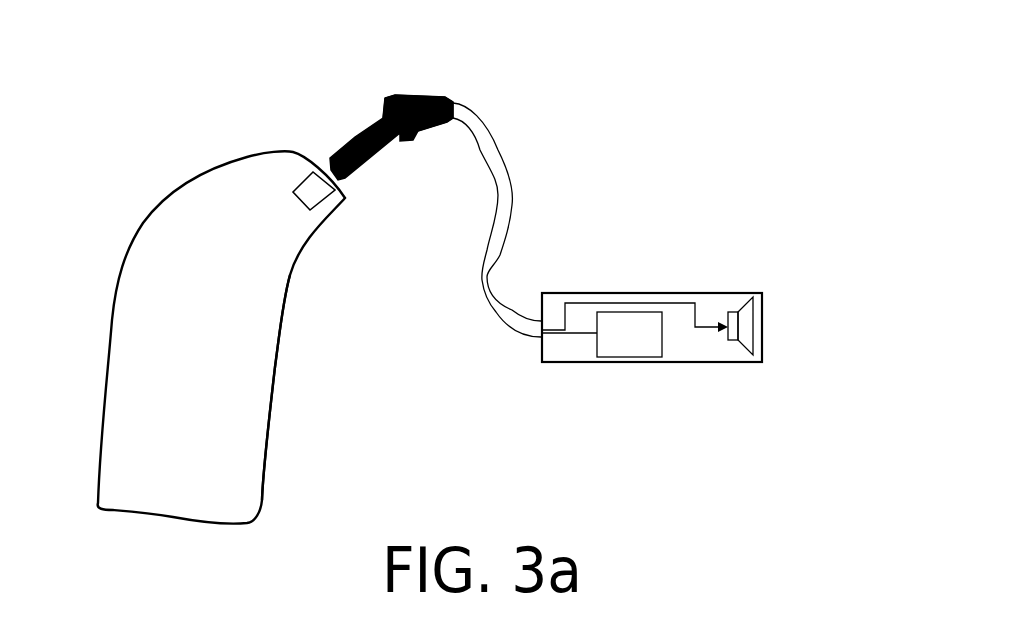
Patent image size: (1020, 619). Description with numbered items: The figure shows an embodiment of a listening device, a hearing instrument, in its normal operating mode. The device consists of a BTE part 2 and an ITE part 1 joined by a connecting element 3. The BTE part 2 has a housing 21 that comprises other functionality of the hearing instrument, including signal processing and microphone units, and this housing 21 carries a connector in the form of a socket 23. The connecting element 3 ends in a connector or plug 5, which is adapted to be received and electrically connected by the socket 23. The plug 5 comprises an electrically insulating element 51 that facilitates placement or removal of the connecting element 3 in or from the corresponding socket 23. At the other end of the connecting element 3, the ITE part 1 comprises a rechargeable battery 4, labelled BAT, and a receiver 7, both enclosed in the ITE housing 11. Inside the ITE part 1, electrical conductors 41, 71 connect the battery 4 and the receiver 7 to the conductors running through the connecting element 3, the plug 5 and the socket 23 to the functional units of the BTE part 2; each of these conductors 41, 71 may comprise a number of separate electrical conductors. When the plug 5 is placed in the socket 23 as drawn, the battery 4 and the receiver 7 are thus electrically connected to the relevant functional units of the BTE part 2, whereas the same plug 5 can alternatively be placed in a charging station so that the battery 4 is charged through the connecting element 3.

The ITE part 1 is at (688, 342).
The ITE housing 11 is at (731, 370).
The BTE part 2 is at (190, 238).
The housing of the BTE part 21 is at (278, 370).
The connector (socket) 23 is at (310, 188).
The connecting element 3 is at (510, 190).
The rechargeable battery 4 is at (627, 352).
The electrical conductor 41 is at (577, 333).
The connector (plug) 5 is at (340, 153).
The electrically insulating element 51 is at (407, 95).
The receiver 7 is at (742, 303).
The electrical conductor 71 is at (682, 302).